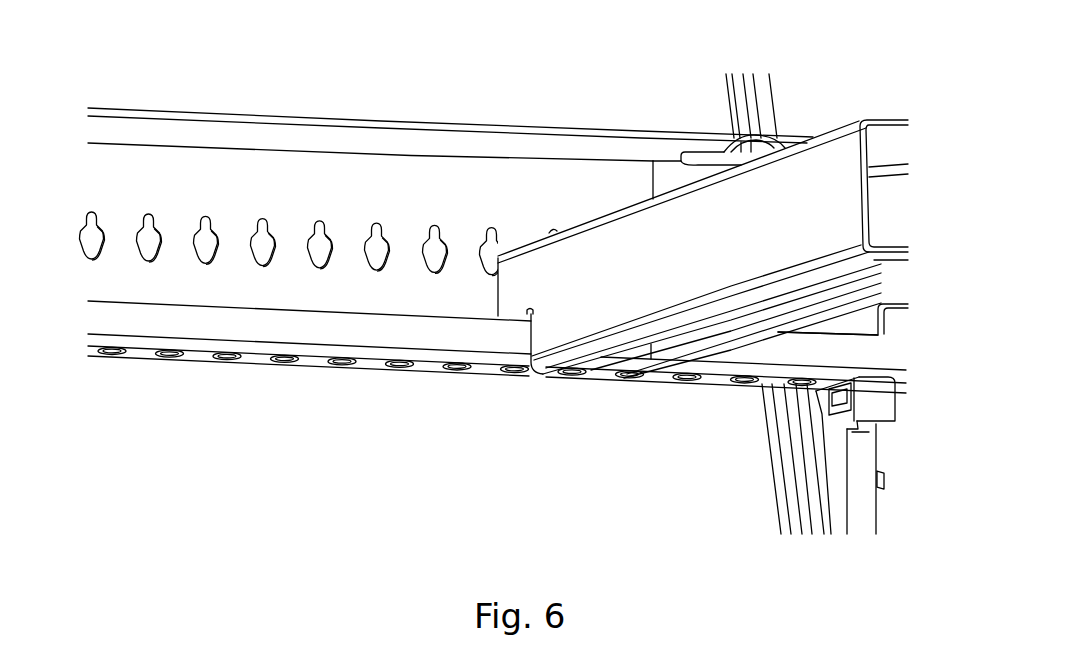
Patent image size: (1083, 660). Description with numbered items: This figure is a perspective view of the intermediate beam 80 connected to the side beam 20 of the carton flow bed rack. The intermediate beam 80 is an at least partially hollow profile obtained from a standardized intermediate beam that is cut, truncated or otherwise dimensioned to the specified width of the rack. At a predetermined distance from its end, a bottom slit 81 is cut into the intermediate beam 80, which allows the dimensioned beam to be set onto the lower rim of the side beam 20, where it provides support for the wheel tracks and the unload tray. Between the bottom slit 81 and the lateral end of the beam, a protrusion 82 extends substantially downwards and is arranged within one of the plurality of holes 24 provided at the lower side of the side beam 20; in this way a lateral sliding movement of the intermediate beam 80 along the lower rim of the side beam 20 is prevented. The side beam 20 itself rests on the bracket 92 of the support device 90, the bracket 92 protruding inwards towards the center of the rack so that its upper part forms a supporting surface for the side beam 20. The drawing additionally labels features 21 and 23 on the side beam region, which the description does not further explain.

The side beam 20 is at (388, 172).
The keyhole openings 21 is at (148, 240).
The lower rail 23 is at (433, 328).
The holes 24 is at (224, 356).
The intermediate beam 80 is at (830, 143).
The bottom slit 81 is at (523, 301).
The protrusion 82 is at (518, 368).
The support device 90 is at (815, 480).
The bracket 92 is at (873, 391).